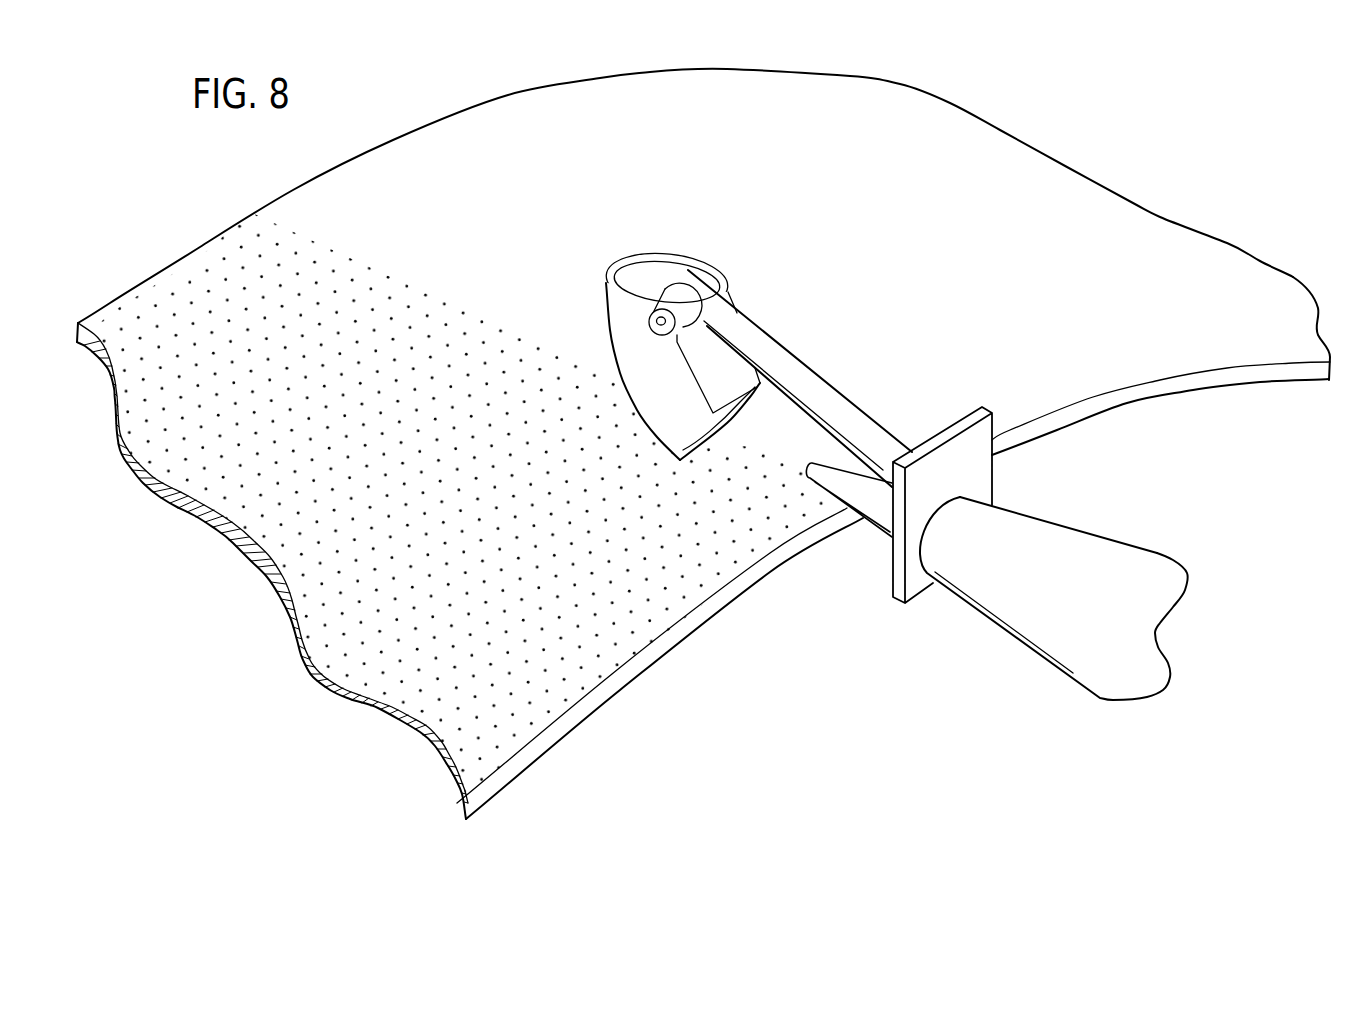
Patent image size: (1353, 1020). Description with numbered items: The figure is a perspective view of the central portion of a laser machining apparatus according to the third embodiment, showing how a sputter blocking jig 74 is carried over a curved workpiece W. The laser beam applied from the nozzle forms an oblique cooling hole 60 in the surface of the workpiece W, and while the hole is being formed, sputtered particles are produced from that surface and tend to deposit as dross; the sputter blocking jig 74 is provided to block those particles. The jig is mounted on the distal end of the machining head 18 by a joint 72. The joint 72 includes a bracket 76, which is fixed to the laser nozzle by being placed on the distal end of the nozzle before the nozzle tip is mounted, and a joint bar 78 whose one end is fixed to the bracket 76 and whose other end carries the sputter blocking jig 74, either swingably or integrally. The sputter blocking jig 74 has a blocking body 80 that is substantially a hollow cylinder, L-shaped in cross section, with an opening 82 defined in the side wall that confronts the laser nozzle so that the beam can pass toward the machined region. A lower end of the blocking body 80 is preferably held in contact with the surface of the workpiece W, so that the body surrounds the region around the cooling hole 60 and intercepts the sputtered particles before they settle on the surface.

The workpiece W is at (1082, 192).
The machining head 18 is at (1080, 527).
The cooling hole 60 is at (526, 660).
The joint 72 is at (753, 460).
The sputter blocking jig 74 is at (606, 350).
The bracket 76 is at (963, 480).
The joint bar 78 is at (832, 390).
The blocking body 80 is at (723, 422).
The opening 82 is at (708, 362).